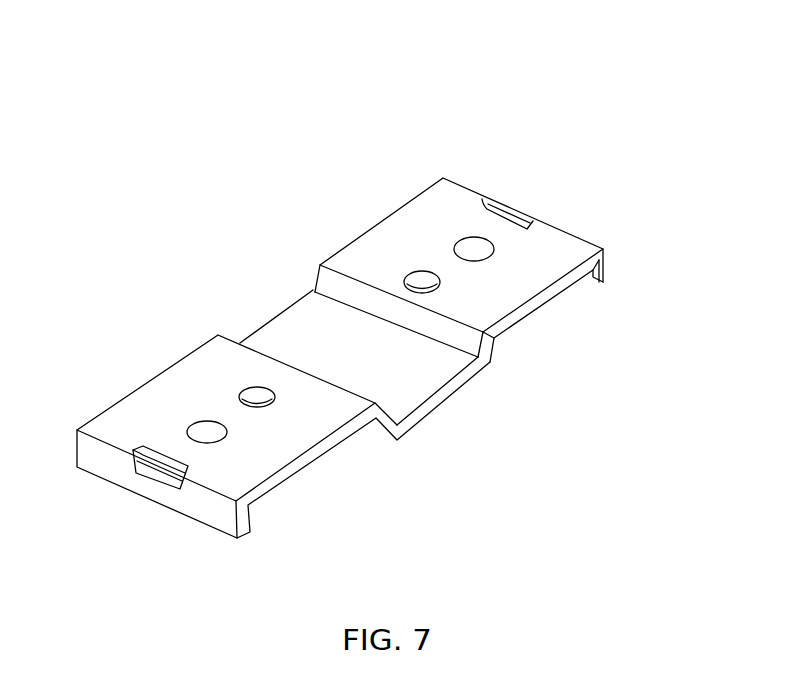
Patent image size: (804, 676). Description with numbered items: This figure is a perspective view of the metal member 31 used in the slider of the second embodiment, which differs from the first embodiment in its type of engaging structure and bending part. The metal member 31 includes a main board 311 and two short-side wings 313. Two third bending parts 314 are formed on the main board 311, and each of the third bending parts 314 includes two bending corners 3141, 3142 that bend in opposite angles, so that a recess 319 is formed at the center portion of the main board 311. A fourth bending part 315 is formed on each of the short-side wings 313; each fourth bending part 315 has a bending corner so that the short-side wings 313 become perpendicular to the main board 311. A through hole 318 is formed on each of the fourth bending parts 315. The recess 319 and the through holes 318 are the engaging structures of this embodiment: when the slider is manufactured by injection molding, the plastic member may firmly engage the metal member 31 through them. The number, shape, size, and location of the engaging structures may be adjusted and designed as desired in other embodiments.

The metal member 31 is at (578, 108).
The main board 311 is at (212, 348).
The short-side wing 313 is at (607, 266).
The third bending part 314 is at (410, 454).
The bending corner 3141 is at (376, 419).
The bending corner 3142 is at (397, 430).
The fourth bending part 315 is at (588, 243).
The through hole 318 is at (490, 205).
The recess 319 is at (282, 333).